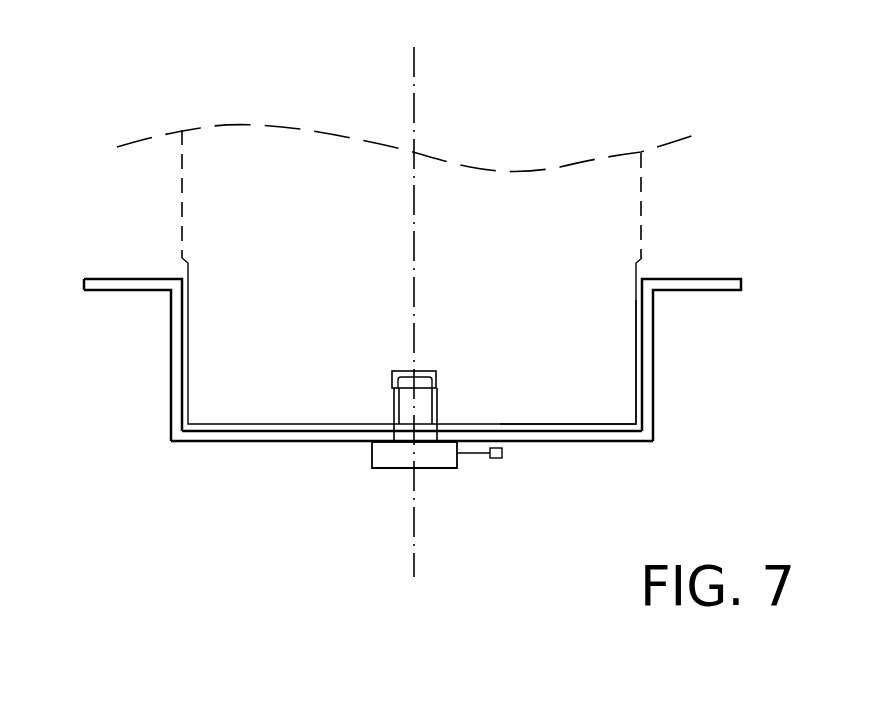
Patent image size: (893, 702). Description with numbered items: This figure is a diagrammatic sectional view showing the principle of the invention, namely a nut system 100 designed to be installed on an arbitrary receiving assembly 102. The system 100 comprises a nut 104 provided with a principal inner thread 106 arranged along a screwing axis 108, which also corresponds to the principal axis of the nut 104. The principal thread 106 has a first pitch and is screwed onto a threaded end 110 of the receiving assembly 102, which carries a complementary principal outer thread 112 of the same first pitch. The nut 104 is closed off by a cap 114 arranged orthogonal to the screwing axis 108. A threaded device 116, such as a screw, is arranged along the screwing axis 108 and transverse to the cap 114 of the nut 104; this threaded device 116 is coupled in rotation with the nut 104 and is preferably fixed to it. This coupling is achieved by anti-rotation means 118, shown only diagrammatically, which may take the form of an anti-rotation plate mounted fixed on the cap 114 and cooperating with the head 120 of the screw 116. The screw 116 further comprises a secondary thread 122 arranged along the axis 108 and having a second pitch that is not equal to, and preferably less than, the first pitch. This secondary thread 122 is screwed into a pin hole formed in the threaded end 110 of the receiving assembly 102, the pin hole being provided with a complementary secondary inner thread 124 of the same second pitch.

The nut system 100 is at (650, 120).
The receiving assembly 102 is at (595, 163).
The nut 104 is at (655, 442).
The principal inner thread 106 is at (641, 424).
The screwing axis 108 is at (414, 125).
The threaded end 110 is at (237, 368).
The principal outer thread 112 is at (187, 345).
The cap 114 is at (273, 441).
The threaded device 116 is at (389, 470).
The anti-rotation means 118 is at (497, 460).
The head 120 is at (437, 468).
The secondary thread 122 is at (433, 412).
The secondary inner thread 124 is at (433, 375).